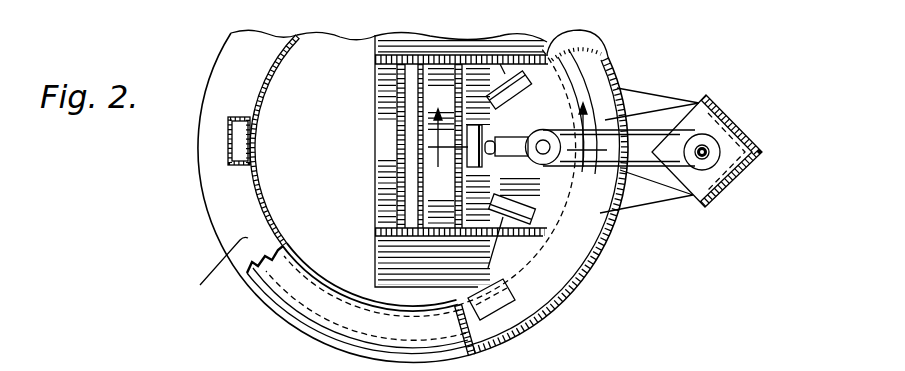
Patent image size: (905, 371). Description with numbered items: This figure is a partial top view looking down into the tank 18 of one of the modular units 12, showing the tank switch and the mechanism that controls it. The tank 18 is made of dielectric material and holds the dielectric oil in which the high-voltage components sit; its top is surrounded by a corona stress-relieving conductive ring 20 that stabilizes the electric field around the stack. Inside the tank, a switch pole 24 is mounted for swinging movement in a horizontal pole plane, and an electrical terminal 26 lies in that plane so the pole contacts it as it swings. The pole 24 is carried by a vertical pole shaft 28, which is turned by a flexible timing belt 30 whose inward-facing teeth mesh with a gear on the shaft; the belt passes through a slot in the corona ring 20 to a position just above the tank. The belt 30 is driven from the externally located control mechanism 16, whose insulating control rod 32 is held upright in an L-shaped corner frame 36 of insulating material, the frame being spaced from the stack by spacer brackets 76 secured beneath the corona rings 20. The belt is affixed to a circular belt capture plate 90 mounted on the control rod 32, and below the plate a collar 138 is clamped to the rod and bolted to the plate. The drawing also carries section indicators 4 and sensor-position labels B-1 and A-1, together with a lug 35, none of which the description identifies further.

The modular unit 12 is at (200, 223).
The control mechanism 16 is at (758, 177).
The tank 18 is at (262, 210).
The corona stress-relieving conductive ring 20 is at (290, 296).
The switch arm or pole 24 is at (513, 140).
The electrical terminal 26 is at (480, 165).
The pole shaft 28 is at (537, 160).
The flexible timing belt 30 is at (661, 128).
The control rod 32 is at (703, 151).
The mounting lug 35 is at (232, 140).
The corner frame 36 is at (714, 192).
The spacer bracket 76 is at (637, 100).
The belt capture plate 90 is at (721, 148).
The collar 138 is at (599, 250).
The section line 4- 4 is at (517, 128).
The sensor B-1 is at (498, 68).
The sensor A-1 is at (496, 241).